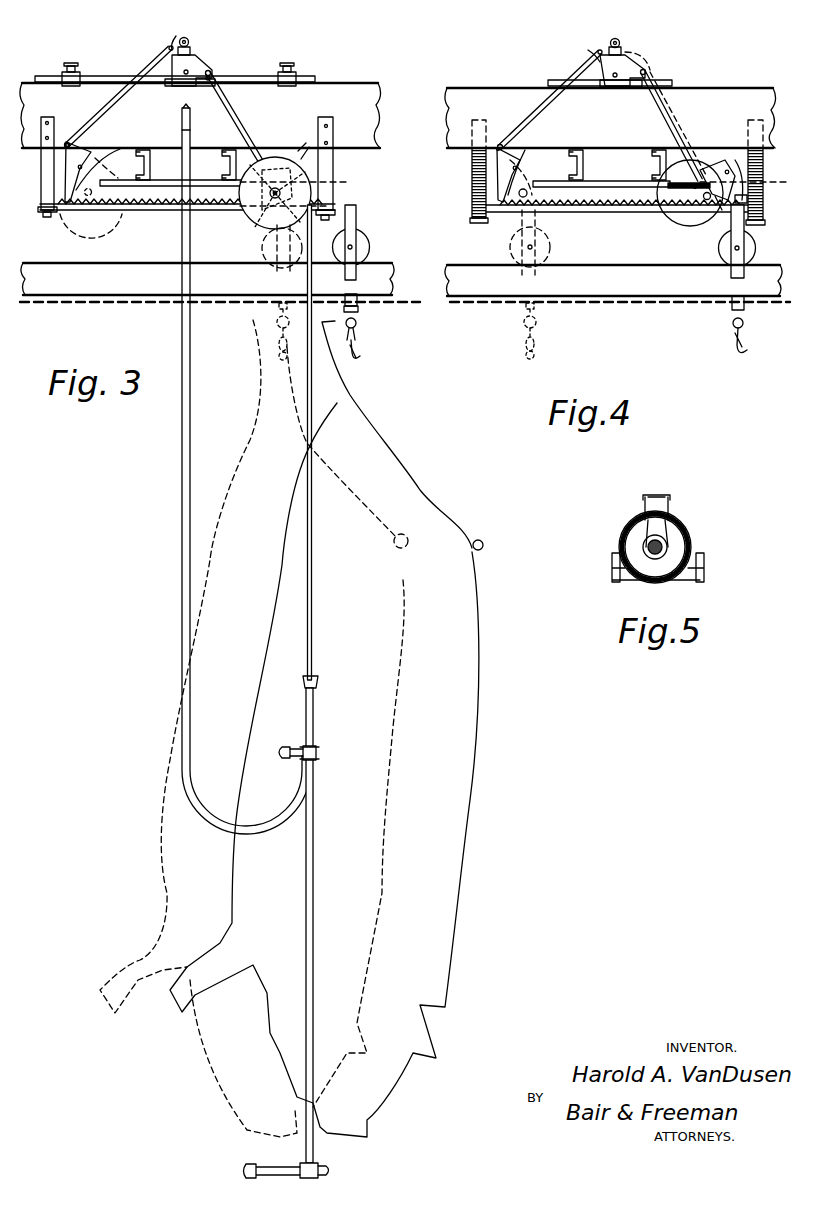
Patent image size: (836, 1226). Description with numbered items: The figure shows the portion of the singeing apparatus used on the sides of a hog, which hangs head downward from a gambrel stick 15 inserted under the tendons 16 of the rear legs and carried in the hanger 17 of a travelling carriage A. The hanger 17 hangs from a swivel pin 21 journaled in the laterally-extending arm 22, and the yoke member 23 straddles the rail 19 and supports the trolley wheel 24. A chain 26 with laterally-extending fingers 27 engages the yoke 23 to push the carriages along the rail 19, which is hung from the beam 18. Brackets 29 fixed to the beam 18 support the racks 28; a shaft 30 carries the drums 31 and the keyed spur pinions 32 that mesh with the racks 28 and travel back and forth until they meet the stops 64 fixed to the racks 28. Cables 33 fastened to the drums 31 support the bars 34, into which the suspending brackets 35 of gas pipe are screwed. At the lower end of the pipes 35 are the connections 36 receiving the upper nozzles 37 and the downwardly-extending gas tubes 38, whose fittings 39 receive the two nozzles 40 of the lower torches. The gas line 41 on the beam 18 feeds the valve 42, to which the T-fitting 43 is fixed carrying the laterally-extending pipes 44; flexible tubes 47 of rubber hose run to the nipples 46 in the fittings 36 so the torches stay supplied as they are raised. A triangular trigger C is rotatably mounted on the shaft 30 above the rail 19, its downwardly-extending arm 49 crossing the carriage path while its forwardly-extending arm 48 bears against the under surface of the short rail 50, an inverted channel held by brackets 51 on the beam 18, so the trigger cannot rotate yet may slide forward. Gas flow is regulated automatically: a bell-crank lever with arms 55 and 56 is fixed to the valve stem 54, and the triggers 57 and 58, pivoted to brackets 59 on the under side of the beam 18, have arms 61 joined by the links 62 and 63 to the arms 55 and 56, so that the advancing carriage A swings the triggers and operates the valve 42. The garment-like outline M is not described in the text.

In FIG. 3, the gambrel stick 15 is at (359, 348).
In FIG. 4, the gambrel stick 15 is at (754, 340).
In FIG. 3, the tendons 16 is at (357, 353).
In FIG. 3, the hanger 17 is at (357, 335).
In FIG. 4, the hanger 17 is at (748, 352).
In FIG. 3, the beam 18 is at (200, 115).
In FIG. 4, the beam 18 is at (610, 118).
In FIG. 3, the rail 19 is at (207, 279).
In FIG. 4, the rail 19 is at (613, 280).
In FIG. 3, the swivel pin 21 is at (357, 323).
In FIG. 4, the swivel pin 21 is at (736, 330).
In FIG. 3, the laterally-extending arm 22 is at (359, 309).
In FIG. 3, the yoke member 23 is at (358, 263).
In FIG. 4, the yoke member 23 is at (746, 266).
In FIG. 3, the trolley wheel 24 is at (368, 247).
In FIG. 4, the trolley wheel 24 is at (757, 248).
In FIG. 3, the chain 26 is at (102, 306).
In FIG. 3, the laterally-extending fingers 27 is at (360, 302).
In FIG. 3, the racks 28 is at (223, 211).
In FIG. 4, the racks 28 is at (603, 214).
In FIG. 3, the brackets 29 is at (42, 190).
In FIG. 4, the brackets 29 is at (471, 168).
In FIG. 4, the shaft 30 is at (704, 199).
In FIG. 3, the drums 31 is at (275, 193).
In FIG. 4, the drums 31 is at (690, 193).
In FIG. 3, the spur pinions 32 is at (263, 236).
In FIG. 4, the spur pinions 32 is at (750, 213).
In FIG. 3, the cables 33 is at (313, 627).
In FIG. 3, the bars 34 is at (320, 683).
In FIG. 3, the suspending brackets 35 is at (314, 706).
In FIG. 3, the connections 36 is at (319, 752).
In FIG. 3, the upper nozzles 37 is at (285, 760).
In FIG. 3, the gas tubes 38 is at (313, 1151).
In FIG. 3, the fittings 39 is at (332, 1172).
In FIG. 3, the nozzles 40 is at (242, 1172).
In FIG. 3, the gas line 41 is at (294, 77).
In FIG. 4, the gas line 41 is at (560, 80).
In FIG. 3, the valve 42 is at (200, 68).
In FIG. 4, the valve 42 is at (604, 82).
In FIG. 5, the valve 42 is at (673, 520).
In FIG. 3, the T-fitting 43 is at (192, 52).
In FIG. 3, the laterally-extending pipes 44 is at (190, 43).
In FIG. 4, the laterally-extending pipes 44 is at (622, 43).
In FIG. 3, the nipples 46 is at (319, 757).
In FIG. 3, the flexible tubes 47 is at (181, 437).
In FIG. 4, the forwardly-extending arm 48 is at (672, 188).
In FIG. 4, the downwardly-extending arm 49 is at (720, 207).
In FIG. 3, the short rail 50 is at (202, 186).
In FIG. 4, the short rail 50 is at (605, 182).
In FIG. 3, the brackets 51 is at (151, 162).
In FIG. 4, the brackets 51 is at (585, 156).
In FIG. 3, the valve stem 54 is at (176, 86).
In FIG. 4, the valve stem 54 is at (617, 88).
In FIG. 5, the valve stem 54 is at (664, 548).
In FIG. 3, the arm 55 is at (208, 80).
In FIG. 4, the arm 55 is at (650, 70).
In FIG. 3, the arm 56 is at (182, 33).
In FIG. 4, the arm 56 is at (585, 47).
In FIG. 3, the trigger 57 is at (310, 187).
In FIG. 4, the trigger 57 is at (748, 182).
In FIG. 3, the trigger 58 is at (120, 149).
In FIG. 4, the trigger 58 is at (506, 183).
In FIG. 3, the brackets 59 is at (300, 157).
In FIG. 4, the brackets 59 is at (524, 160).
In FIG. 3, the arms 61 is at (74, 150).
In FIG. 4, the arms 61 is at (500, 145).
In FIG. 3, the link 62 is at (227, 99).
In FIG. 4, the link 62 is at (662, 98).
In FIG. 3, the link 63 is at (152, 68).
In FIG. 4, the link 63 is at (548, 100).
In FIG. 4, the stops 64 is at (748, 199).
In FIG. 3, the travelling carriage A is at (358, 209).
In FIG. 4, the travelling carriage A is at (730, 304).
In FIG. 4, the trigger C is at (693, 189).
In FIG. 3, the garment M is at (376, 472).